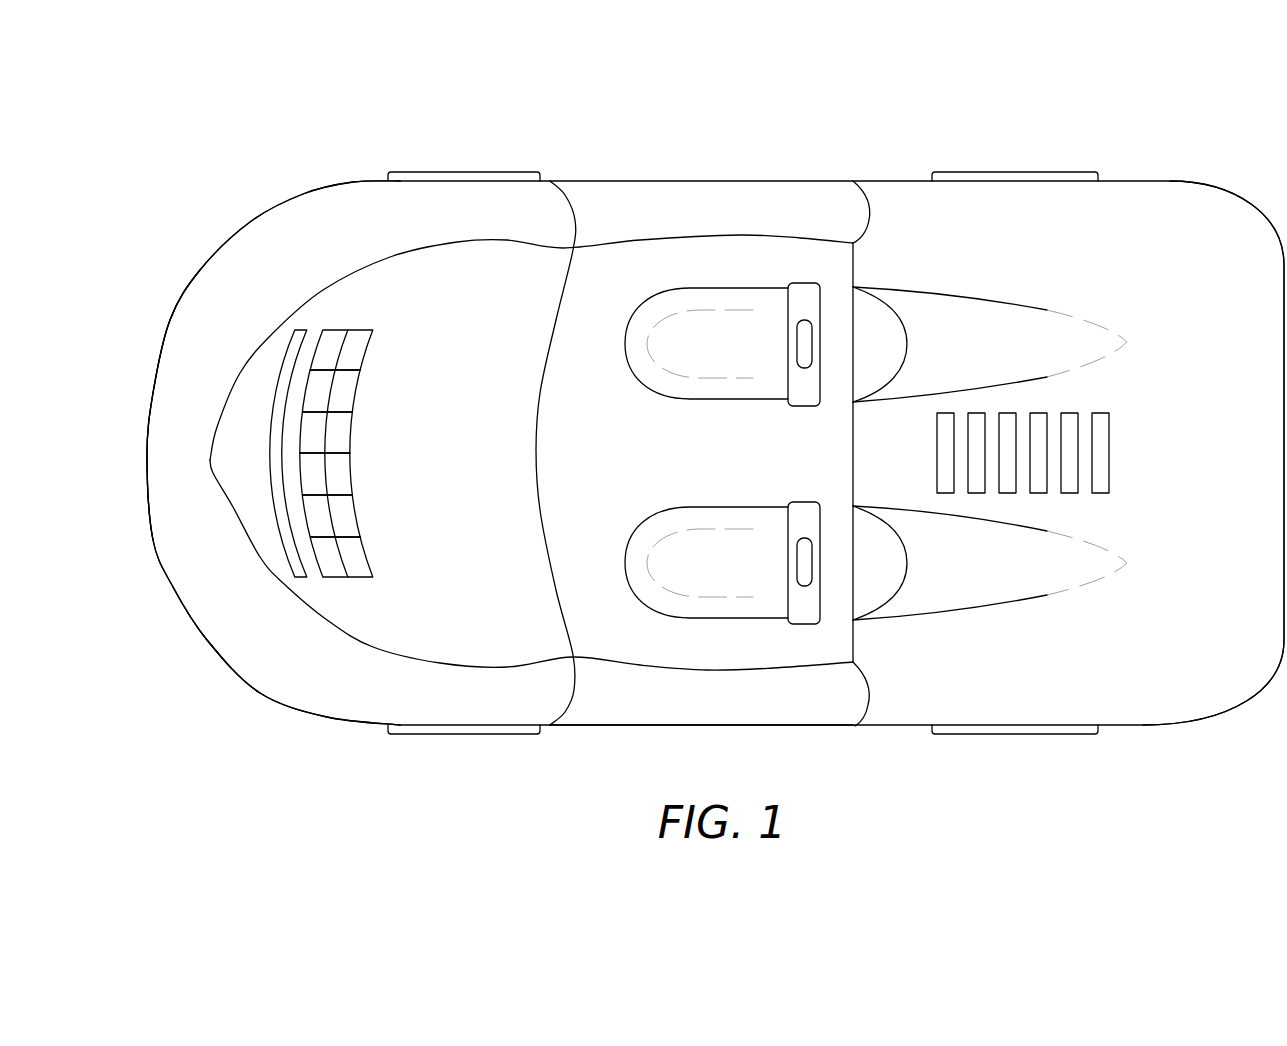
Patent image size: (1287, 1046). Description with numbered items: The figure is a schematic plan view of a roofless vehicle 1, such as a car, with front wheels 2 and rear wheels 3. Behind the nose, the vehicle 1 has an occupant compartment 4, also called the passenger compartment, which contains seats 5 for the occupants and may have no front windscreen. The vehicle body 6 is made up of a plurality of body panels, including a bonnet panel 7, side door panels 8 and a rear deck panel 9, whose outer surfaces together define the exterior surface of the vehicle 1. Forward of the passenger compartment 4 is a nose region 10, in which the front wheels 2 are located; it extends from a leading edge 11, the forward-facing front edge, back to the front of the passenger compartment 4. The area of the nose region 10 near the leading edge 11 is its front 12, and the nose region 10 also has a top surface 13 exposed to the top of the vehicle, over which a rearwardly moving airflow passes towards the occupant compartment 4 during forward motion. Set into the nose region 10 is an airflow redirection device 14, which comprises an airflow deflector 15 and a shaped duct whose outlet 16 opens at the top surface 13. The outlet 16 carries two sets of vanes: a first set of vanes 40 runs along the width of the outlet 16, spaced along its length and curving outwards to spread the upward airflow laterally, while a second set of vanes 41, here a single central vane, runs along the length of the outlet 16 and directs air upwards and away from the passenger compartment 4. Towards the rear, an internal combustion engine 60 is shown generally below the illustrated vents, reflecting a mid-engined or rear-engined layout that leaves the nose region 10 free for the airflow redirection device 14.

The vehicle 1 is at (868, 136).
The front wheels 2 is at (464, 170).
The rear wheels 3 is at (1015, 173).
The occupant compartment 4 is at (783, 252).
The seats 5 is at (725, 300).
The vehicle body 6 is at (259, 697).
The bonnet panel 7 is at (213, 628).
The side door panel 8 is at (629, 713).
The rear deck panel 9 is at (1223, 697).
The nose region 10 is at (132, 452).
The leading edge 11 is at (165, 339).
The front 12 is at (188, 584).
The top surface 13 is at (405, 340).
The airflow redirection device 14 is at (262, 457).
The airflow deflector 15 is at (280, 506).
The outlet 16 is at (350, 580).
The first set of vanes 40 is at (361, 453).
The second set of vanes 41 is at (349, 330).
The internal combustion engine 60 is at (1108, 450).